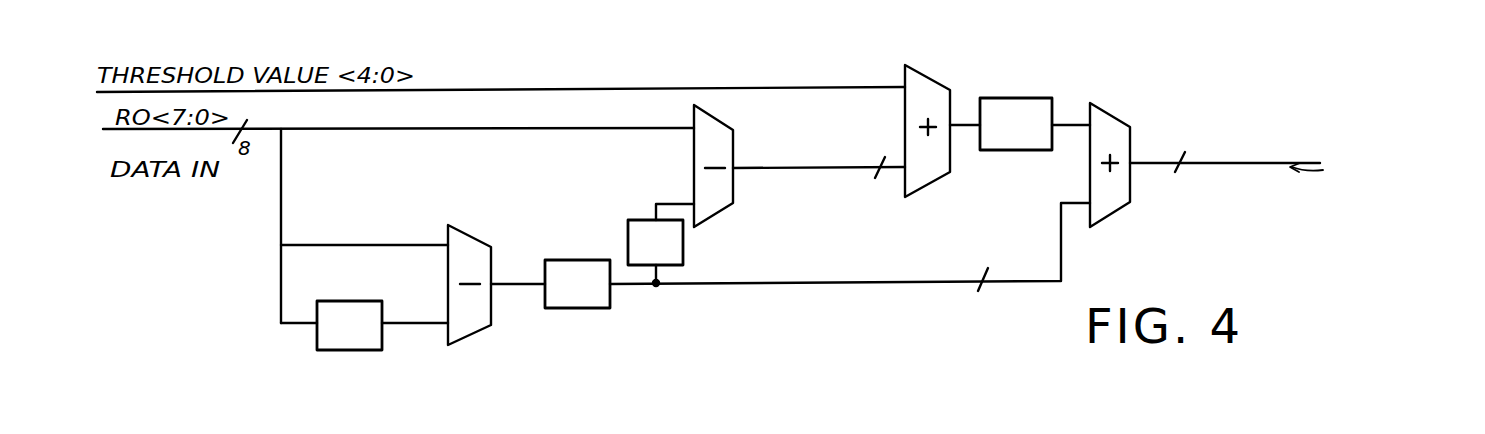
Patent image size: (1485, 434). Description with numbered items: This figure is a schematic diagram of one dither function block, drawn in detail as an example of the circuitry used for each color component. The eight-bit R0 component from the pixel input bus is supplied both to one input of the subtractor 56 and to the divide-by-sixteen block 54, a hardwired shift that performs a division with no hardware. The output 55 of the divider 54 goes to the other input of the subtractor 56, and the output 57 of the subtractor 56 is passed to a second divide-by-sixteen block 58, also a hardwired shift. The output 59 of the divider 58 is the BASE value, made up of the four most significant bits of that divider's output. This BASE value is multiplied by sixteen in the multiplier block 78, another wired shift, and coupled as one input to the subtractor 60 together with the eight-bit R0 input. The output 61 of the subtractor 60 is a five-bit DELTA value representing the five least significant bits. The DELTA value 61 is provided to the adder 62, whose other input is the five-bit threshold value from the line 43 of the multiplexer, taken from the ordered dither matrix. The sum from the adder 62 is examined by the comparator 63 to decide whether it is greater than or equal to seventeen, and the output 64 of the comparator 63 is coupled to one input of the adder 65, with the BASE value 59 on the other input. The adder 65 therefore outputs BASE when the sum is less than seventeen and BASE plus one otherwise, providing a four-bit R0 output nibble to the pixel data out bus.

The threshold value line 43 is at (522, 87).
The divide-by-16 block 54 is at (350, 302).
The output of divider 55 is at (420, 325).
The subtractor 56 is at (457, 224).
The output of subtractor 57 is at (505, 280).
The second divide-by-16 block 58 is at (560, 262).
The BASE value output 59 is at (656, 285).
The subtractor 60 is at (728, 122).
The DELTA value output 61 is at (803, 172).
The adder 62 is at (930, 73).
The comparator 63 is at (1010, 98).
The output of comparator 64 is at (1067, 120).
The adder 65 is at (1120, 115).
The multiplier block 78 is at (683, 243).